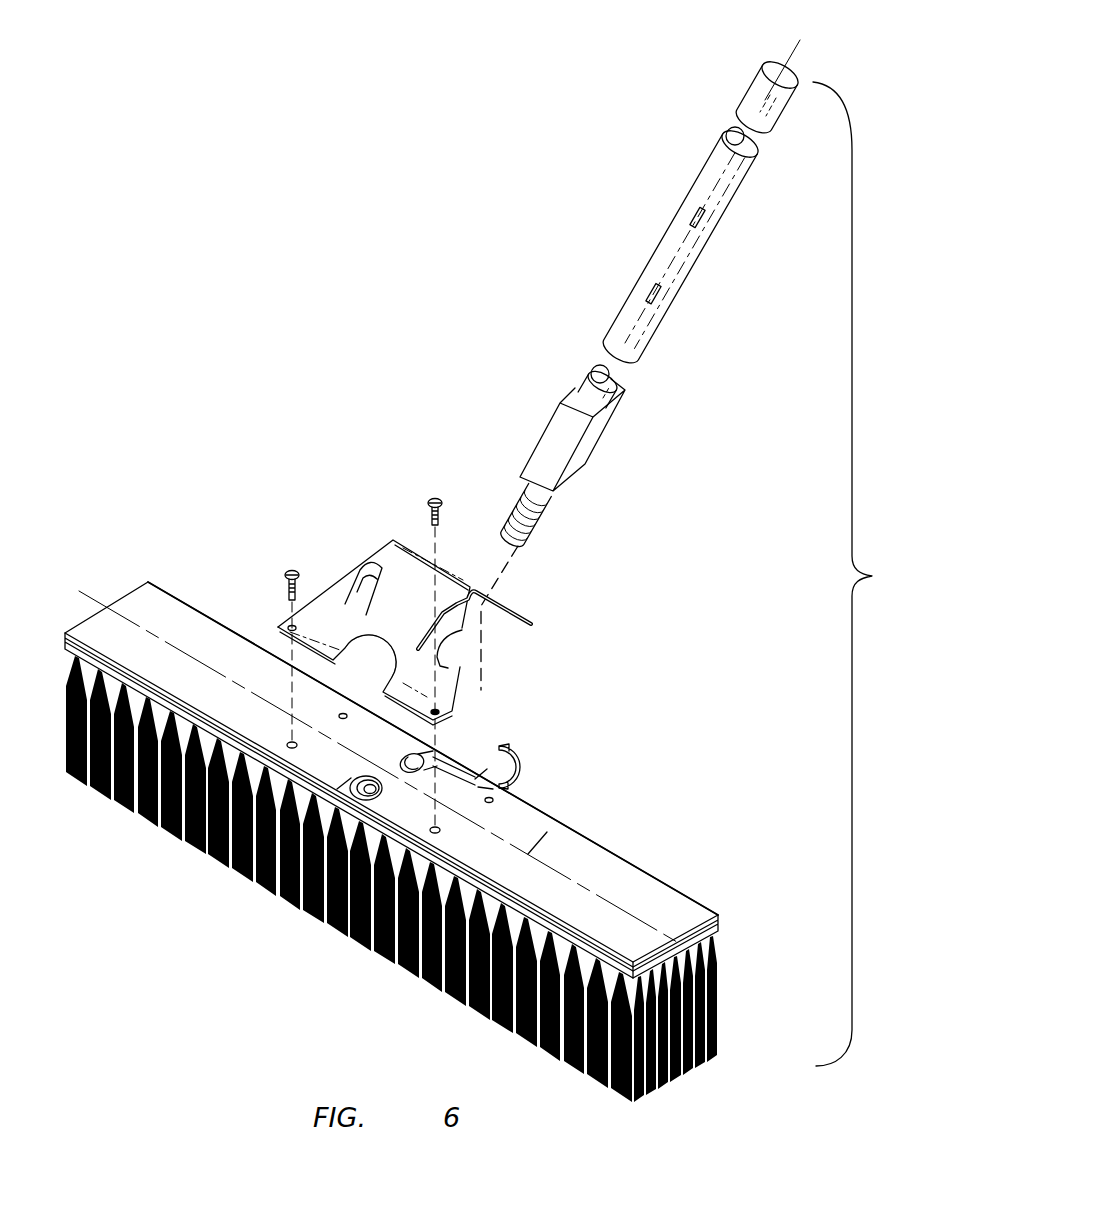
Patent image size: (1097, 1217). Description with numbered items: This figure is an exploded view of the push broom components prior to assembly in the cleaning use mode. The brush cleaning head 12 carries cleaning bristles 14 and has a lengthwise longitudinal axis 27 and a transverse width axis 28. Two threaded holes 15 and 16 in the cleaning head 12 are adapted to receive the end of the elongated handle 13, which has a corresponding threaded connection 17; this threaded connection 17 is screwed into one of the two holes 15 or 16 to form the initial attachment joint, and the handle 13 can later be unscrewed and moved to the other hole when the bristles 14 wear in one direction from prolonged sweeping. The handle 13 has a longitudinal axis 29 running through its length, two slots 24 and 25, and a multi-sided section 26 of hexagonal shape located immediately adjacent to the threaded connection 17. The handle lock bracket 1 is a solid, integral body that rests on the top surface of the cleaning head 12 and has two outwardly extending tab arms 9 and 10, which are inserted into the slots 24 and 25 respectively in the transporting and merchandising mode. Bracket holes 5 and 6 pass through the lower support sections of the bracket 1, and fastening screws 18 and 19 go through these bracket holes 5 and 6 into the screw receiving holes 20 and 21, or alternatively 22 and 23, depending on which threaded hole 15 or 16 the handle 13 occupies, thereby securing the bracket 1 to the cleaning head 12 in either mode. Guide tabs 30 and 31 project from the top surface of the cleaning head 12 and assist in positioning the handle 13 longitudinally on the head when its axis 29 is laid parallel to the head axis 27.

The handle lock bracket 1 is at (375, 594).
The bracket hole 5 is at (286, 628).
The bracket hole 6 is at (443, 713).
The tab arm 9 is at (355, 585).
The tab arm 10 is at (466, 630).
The brush cleaning head 12 is at (424, 780).
The handle 13 is at (696, 240).
The cleaning bristles 14 is at (716, 1000).
The threaded hole 15 is at (508, 755).
The threaded hole 16 is at (382, 798).
The threaded connection 17 is at (510, 508).
The fastening screw 18 is at (288, 573).
The fastening screw 19 is at (430, 500).
The screw receiving hole 20 is at (287, 745).
The screw receiving hole 21 is at (441, 830).
The screw receiving hole 22 is at (347, 718).
The screw receiving hole 23 is at (495, 799).
The slot 24 is at (700, 218).
The slot 25 is at (656, 296).
The multi-sided section 26 is at (590, 452).
The longitudinal axis 27 is at (580, 820).
The transverse width axis 28 is at (607, 873).
The longitudinal axis 29 is at (790, 53).
The guide tab 30 is at (380, 694).
The guide tab 31 is at (512, 747).